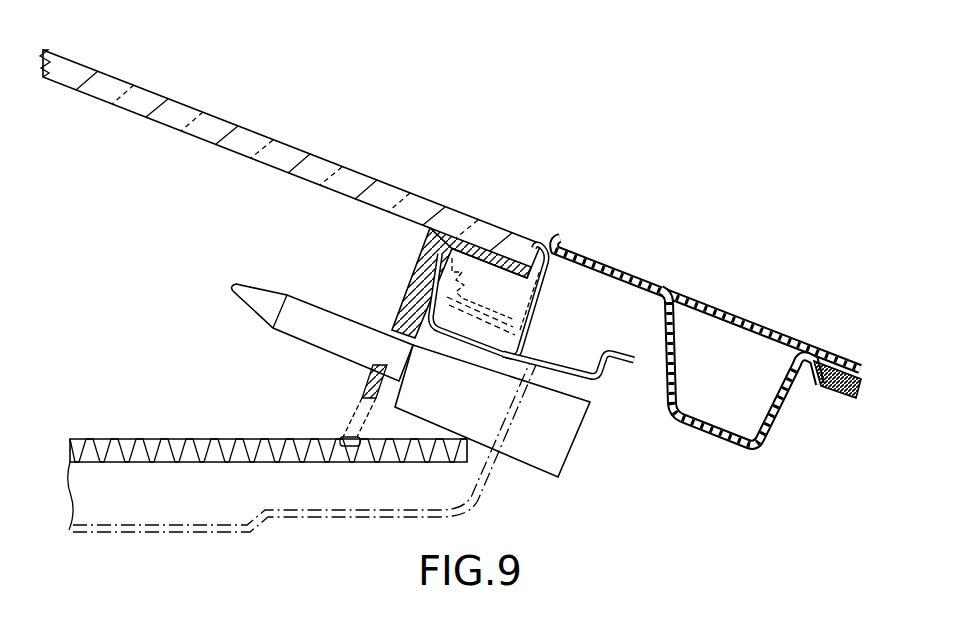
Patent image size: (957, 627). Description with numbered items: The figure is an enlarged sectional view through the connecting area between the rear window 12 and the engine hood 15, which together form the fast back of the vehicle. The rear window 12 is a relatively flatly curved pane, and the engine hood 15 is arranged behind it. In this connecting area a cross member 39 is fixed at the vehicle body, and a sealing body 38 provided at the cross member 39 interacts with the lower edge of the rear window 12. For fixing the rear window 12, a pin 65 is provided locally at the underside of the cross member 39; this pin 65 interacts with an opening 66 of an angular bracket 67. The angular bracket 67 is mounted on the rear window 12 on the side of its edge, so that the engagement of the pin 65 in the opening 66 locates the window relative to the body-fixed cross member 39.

The rear window 12 is at (110, 82).
The engine hood 15 is at (621, 262).
The sealing body 38 is at (484, 292).
The cross member 39 is at (470, 358).
The pin 65 is at (297, 343).
The opening 66 is at (352, 372).
The angular bracket 67 is at (406, 284).